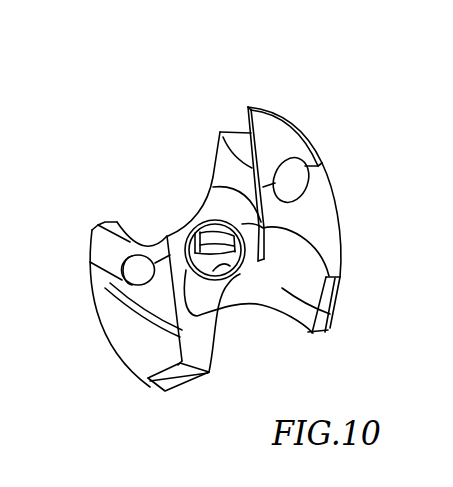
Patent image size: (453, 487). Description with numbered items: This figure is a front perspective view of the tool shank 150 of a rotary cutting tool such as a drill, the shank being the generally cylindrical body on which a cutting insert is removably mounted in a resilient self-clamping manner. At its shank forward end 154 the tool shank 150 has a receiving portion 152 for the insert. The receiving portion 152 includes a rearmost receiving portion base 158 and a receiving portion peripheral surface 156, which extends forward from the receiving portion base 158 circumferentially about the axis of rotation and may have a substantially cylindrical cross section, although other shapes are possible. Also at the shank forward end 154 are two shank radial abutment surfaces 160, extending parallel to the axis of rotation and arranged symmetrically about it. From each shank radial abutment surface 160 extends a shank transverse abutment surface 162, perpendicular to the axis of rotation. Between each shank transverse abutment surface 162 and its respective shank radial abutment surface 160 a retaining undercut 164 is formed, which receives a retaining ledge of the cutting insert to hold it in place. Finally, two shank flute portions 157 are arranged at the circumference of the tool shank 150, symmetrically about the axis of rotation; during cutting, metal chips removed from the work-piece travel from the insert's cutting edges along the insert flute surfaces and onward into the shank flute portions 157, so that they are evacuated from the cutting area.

The tool shank 150 is at (283, 76).
The receiving portion 152 is at (168, 181).
The shank forward end 154 is at (110, 178).
The receiving portion peripheral surface 156 is at (187, 243).
The shank flute portion 157 is at (330, 316).
The receiving portion base 158 is at (224, 270).
The shank radial abutment surface 160 is at (219, 155).
The shank transverse abutment surface 162 is at (232, 178).
The retaining undercut 164 is at (238, 136).